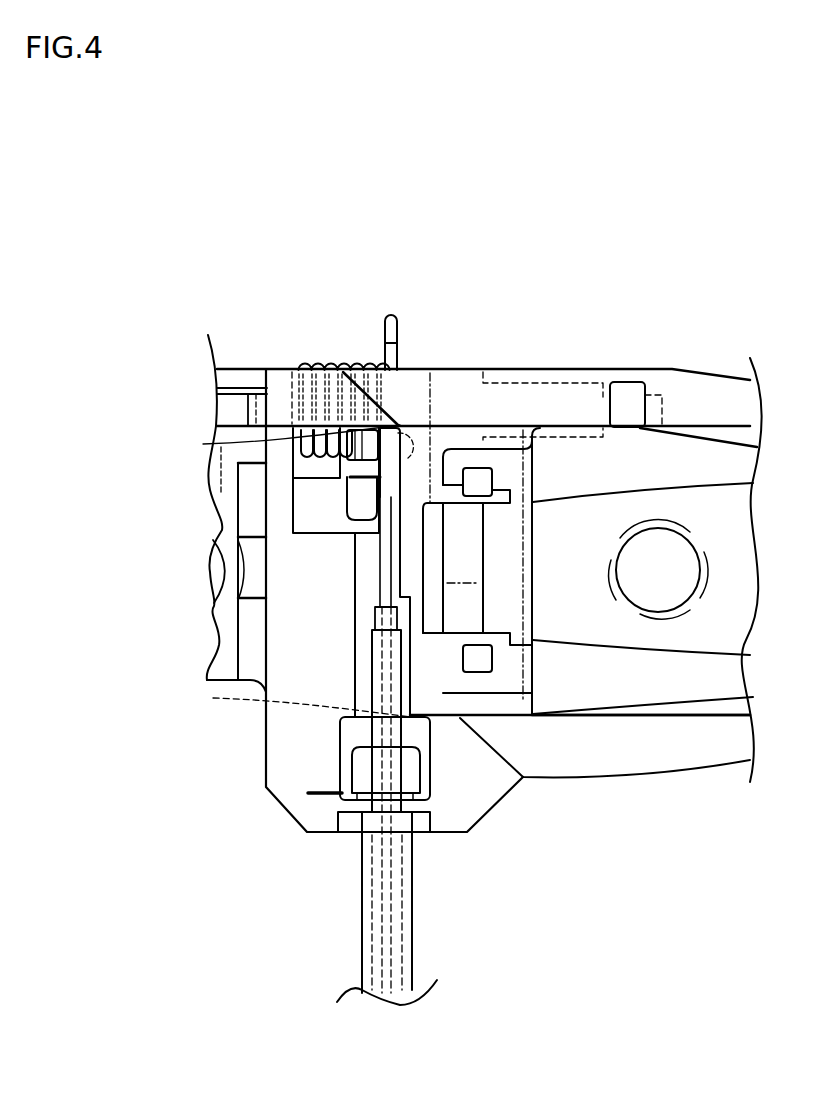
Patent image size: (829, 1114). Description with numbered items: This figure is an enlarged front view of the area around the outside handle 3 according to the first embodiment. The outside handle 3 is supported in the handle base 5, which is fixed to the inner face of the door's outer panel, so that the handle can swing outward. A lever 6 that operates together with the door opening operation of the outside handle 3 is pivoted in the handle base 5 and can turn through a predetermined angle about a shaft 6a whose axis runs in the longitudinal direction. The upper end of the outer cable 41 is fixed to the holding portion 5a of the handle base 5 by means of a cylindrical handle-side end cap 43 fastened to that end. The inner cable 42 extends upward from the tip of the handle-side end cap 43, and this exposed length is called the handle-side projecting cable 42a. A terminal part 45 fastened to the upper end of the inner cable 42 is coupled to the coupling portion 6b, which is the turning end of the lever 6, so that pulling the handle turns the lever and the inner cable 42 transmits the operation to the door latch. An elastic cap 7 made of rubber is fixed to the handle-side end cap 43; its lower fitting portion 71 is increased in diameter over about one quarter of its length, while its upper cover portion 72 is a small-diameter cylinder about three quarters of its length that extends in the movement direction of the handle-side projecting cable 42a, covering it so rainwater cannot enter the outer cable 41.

The outside handle 3 is at (297, 707).
The handle base 5 is at (502, 368).
The holding portion 5a is at (347, 805).
The lever 6 is at (567, 368).
The shaft 6a is at (275, 395).
The coupling portion 6b is at (350, 497).
The elastic cap 7 is at (401, 731).
The outer cable 41 is at (405, 915).
The inner cable 42 is at (383, 953).
The handle-side projecting cable 42a is at (382, 663).
The handle-side end cap 43 is at (362, 876).
The terminal part 45 is at (412, 445).
The fitting portion 71 is at (425, 768).
The cover portion 72 is at (407, 688).